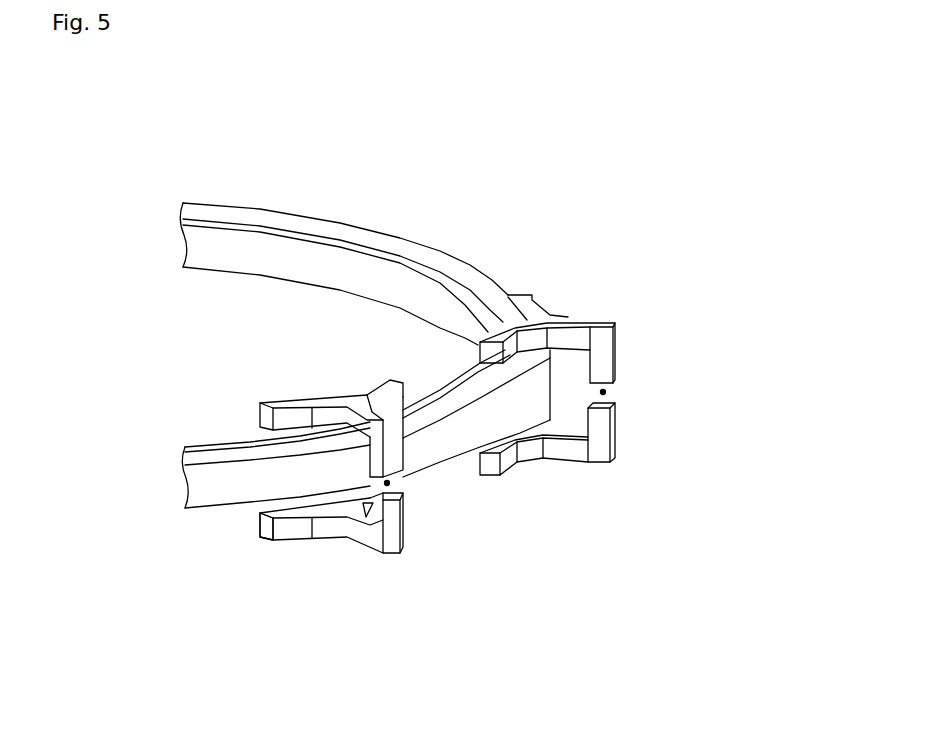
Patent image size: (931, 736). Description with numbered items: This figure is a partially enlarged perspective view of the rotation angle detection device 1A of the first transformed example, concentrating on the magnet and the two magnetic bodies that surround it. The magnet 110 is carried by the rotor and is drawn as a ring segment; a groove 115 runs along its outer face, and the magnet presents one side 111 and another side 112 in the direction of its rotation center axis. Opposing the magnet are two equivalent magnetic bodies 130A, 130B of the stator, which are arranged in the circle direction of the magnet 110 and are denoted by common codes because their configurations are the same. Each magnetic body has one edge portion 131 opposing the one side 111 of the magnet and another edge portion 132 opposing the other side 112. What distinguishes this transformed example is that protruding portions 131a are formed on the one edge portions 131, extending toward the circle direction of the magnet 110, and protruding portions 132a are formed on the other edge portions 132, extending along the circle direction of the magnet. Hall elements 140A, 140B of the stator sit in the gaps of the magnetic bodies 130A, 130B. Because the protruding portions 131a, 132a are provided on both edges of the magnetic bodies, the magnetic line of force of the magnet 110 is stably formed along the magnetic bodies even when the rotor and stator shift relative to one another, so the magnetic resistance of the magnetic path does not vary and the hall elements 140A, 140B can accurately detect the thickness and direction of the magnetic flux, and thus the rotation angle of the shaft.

The rotation angle detection device 1A is at (497, 147).
The magnet 110 is at (370, 230).
The groove 115 is at (313, 240).
The one side of the magnet 111 is at (202, 458).
The another side of the magnet 112 is at (199, 518).
The magnetic body 130A is at (374, 555).
The magnetic body 130B is at (621, 358).
The one edge portion 131 is at (336, 397).
The protruding portion 131a is at (268, 402).
The another edge portion 132 is at (323, 540).
The protruding portion 132a is at (262, 540).
The hall element 140A is at (390, 484).
The hall element 140B is at (606, 392).